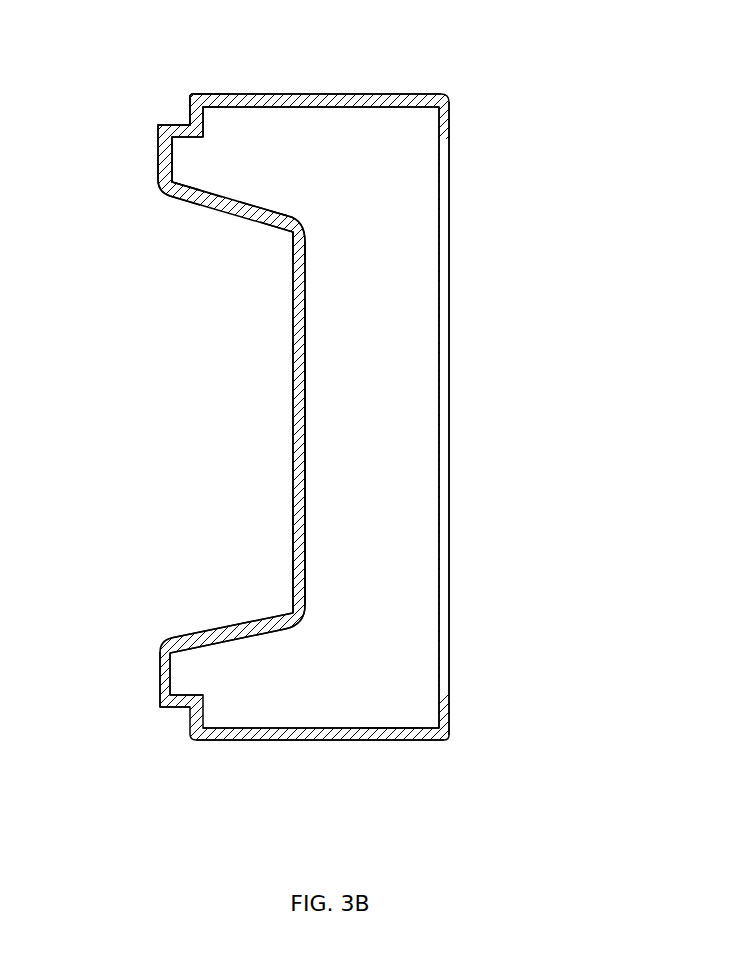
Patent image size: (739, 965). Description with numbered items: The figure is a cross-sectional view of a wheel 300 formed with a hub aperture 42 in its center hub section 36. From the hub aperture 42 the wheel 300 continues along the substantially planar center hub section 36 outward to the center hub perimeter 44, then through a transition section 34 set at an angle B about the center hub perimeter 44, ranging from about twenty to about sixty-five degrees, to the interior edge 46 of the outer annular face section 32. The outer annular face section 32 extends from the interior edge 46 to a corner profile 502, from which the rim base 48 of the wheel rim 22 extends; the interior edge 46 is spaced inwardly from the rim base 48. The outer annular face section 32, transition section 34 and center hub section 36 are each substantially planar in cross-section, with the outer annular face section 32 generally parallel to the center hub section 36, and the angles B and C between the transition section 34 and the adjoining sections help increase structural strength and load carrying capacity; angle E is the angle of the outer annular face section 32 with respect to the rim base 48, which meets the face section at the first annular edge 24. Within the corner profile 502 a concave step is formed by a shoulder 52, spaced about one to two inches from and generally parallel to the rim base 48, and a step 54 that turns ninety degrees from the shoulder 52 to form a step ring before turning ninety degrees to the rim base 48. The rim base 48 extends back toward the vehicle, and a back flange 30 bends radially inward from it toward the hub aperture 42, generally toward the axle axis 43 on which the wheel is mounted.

The wheel 300 is at (509, 151).
The wheel rim 22 is at (412, 86).
The back flange 30 is at (451, 711).
The first annular edge 24 is at (190, 741).
The rim base 48 is at (398, 763).
The hub aperture 42 is at (292, 382).
The axis 43 is at (303, 417).
The center hub section 36 is at (292, 548).
The transition section 34 is at (231, 621).
The outer annular face section 32 is at (158, 668).
The center hub perimeter 44 is at (290, 232).
The interior edge 46 is at (166, 190).
The shoulder 52 is at (157, 131).
The step 54 is at (198, 92).
The corner profile 502 is at (175, 97).
The angle E is at (173, 153).
The angle C is at (173, 170).
The angle B is at (294, 214).